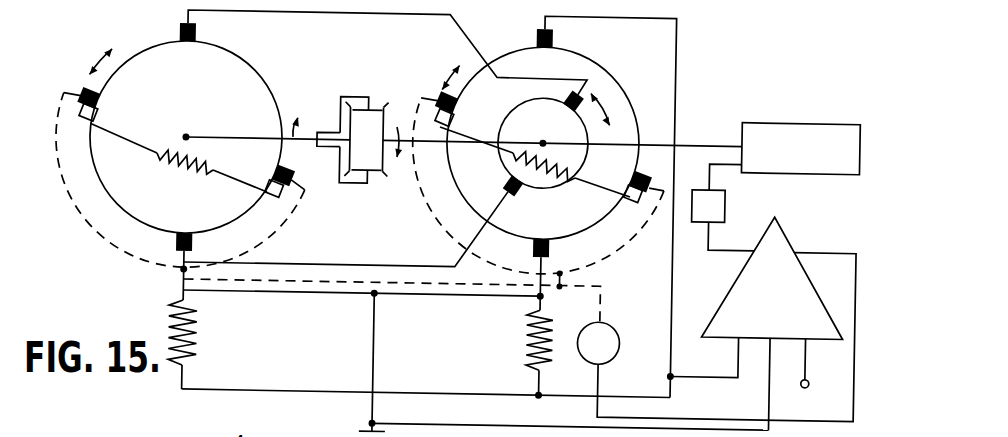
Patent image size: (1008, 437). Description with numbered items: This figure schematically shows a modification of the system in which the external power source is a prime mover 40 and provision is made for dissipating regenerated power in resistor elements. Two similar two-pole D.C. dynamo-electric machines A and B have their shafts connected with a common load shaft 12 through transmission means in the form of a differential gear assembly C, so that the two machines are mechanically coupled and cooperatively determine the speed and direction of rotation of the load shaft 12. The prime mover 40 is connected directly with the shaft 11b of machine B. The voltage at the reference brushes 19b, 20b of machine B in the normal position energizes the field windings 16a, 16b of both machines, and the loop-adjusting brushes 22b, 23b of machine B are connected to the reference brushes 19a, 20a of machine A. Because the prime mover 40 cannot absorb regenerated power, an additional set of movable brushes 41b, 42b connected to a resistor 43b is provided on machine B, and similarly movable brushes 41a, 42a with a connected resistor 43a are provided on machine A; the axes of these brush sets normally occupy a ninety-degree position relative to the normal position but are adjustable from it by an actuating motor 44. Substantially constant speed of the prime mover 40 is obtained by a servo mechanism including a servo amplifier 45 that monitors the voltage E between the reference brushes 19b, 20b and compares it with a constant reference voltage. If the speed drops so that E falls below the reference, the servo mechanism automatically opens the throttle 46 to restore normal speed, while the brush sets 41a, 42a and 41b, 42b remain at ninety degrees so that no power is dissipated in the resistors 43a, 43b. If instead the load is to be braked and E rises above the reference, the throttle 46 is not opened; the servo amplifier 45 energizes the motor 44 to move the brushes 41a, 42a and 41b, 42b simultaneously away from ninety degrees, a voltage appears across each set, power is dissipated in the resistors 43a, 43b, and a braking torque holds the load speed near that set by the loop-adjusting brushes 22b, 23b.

The dynamo-electric machine A is at (148, 36).
The dynamo-electric machine B is at (624, 64).
The differential gear assembly C is at (370, 84).
The common load shaft 12 is at (328, 128).
The shaft of machine B 11b is at (712, 138).
The reference brush of machine A 19a is at (195, 31).
The reference brush of machine B 19b is at (541, 22).
The reference brush of machine A 20a is at (177, 240).
The reference brush of machine B 20b is at (551, 243).
The loop-adjusting brush of machine B 22b is at (572, 83).
The loop-adjusting brush of machine B 23b is at (508, 178).
The movable brush of machine A 41a is at (96, 102).
The movable brush of machine B 41b is at (455, 98).
The movable brush of machine A 42a is at (288, 174).
The movable brush of machine B 42b is at (648, 170).
The resistor 43a is at (170, 160).
The resistor 43b is at (549, 169).
The field winding of machine A 16a is at (198, 335).
The field winding of machine B 16b is at (532, 332).
The prime mover 40 is at (795, 112).
The actuating motor 44 is at (610, 319).
The servo amplifier 45 is at (782, 230).
The throttle 46 is at (728, 196).